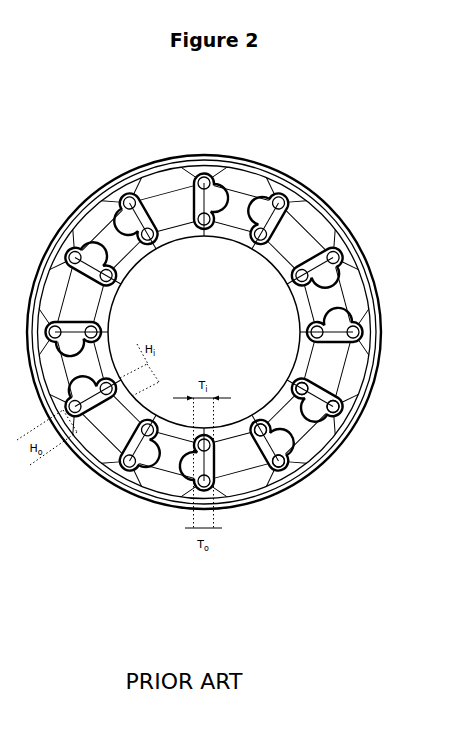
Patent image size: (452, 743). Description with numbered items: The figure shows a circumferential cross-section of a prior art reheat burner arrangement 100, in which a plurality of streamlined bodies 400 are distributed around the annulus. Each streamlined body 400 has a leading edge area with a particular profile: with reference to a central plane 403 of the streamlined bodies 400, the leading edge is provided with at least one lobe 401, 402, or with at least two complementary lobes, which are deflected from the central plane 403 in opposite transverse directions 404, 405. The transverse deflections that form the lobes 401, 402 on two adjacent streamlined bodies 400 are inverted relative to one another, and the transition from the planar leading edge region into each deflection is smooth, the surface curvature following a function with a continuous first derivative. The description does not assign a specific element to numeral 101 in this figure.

The reheat burner arrangement 100 is at (177, 143).
The inner hub 101 is at (157, 247).
The streamlined body 400 is at (358, 224).
The lobe 401 is at (291, 183).
The lobe 402 is at (217, 163).
The central plane 403 is at (103, 153).
The transverse direction 404 is at (276, 482).
The transverse direction 405 is at (324, 458).